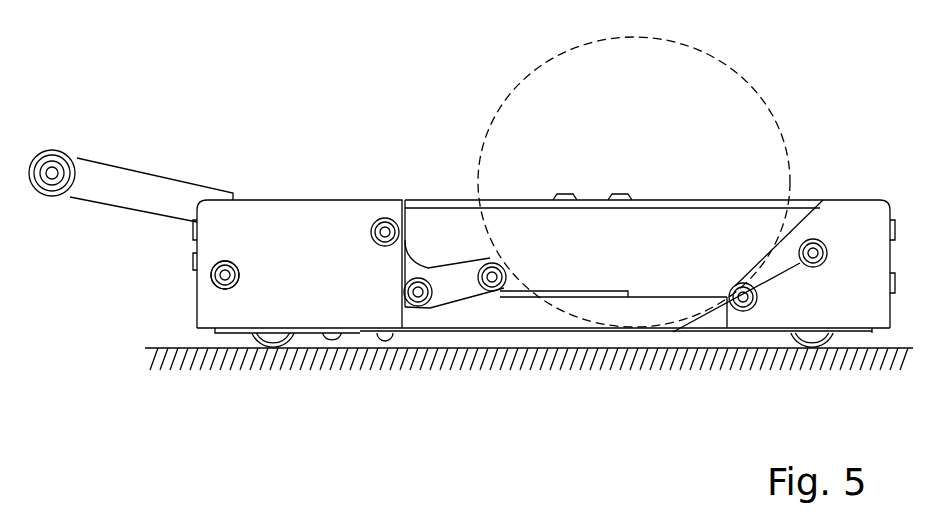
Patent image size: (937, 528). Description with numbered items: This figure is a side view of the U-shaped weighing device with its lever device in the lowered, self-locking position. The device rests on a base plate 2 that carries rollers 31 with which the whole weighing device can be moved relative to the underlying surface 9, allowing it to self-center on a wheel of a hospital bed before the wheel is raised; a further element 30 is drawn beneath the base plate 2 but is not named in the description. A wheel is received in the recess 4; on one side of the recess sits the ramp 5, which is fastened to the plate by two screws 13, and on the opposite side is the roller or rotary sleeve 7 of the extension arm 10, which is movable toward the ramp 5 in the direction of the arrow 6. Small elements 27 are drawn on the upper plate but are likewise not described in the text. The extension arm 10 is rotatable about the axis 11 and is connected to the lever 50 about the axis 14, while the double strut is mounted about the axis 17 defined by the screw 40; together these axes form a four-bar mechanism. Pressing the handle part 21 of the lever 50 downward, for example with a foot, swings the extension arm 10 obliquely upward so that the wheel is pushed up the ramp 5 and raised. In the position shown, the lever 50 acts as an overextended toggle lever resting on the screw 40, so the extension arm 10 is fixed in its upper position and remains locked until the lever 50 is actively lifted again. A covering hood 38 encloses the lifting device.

The base plate 2 is at (238, 333).
The recess 4 is at (613, 281).
The ramp 5 is at (707, 323).
The arrow 6 is at (750, 158).
The roller or rotary sleeve 7 is at (489, 280).
The underlying surface 9 is at (518, 346).
The extension arm 10 is at (455, 282).
The axis 11 is at (388, 222).
The screws 13 is at (750, 286).
The axis 14 is at (420, 293).
The axis 17 is at (218, 283).
The handle part 21 is at (65, 153).
The stop 27 is at (622, 195).
The castor 30 is at (385, 338).
The rollers 31 is at (273, 337).
The covering hood 38 is at (302, 225).
The screw 40 is at (222, 284).
The lever 50 is at (157, 197).